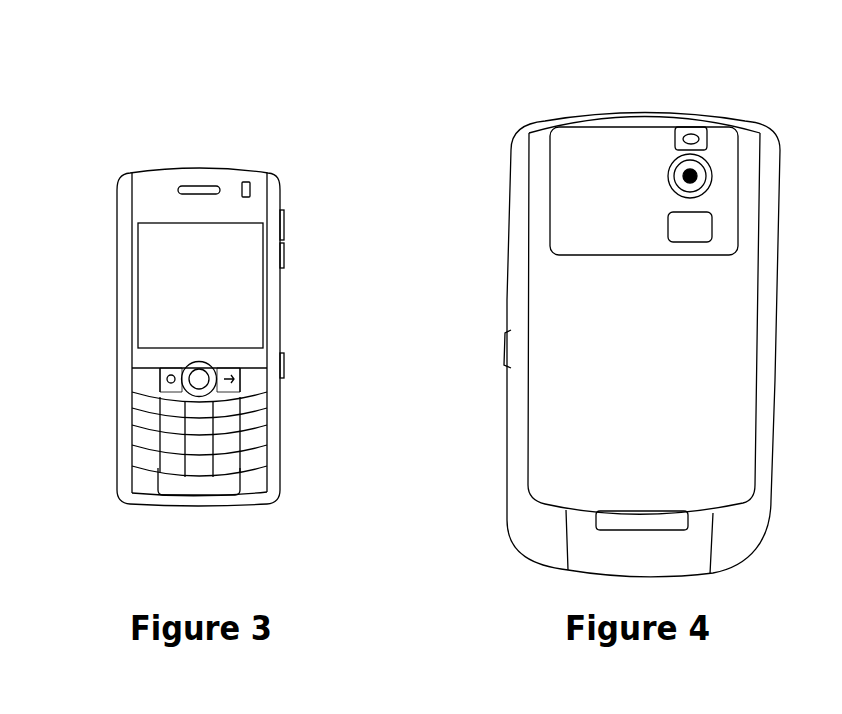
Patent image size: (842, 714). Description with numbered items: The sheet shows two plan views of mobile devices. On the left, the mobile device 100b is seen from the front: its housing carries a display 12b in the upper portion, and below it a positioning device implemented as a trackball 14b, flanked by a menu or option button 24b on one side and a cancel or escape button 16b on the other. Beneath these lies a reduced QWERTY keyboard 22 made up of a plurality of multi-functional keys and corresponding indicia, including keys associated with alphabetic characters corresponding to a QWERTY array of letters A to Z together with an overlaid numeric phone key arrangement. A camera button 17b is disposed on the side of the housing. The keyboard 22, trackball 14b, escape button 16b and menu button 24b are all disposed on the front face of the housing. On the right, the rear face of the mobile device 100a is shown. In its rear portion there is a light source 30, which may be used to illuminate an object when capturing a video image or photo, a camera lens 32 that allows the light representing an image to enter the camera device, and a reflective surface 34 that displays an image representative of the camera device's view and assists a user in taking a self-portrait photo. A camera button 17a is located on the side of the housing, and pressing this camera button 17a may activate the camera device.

In FIG. 3, the mobile device 100b is at (96, 239).
In FIG. 3, the display 12b is at (210, 282).
In FIG. 3, the trackball 14b is at (210, 362).
In FIG. 3, the cancel or escape button 16b is at (237, 383).
In FIG. 3, the camera button 17b is at (286, 374).
In FIG. 3, the reduced QWERTY keyboard 22 is at (151, 464).
In FIG. 3, the menu or option button 24b is at (170, 377).
In FIG. 4, the mobile device 100a is at (542, 88).
In FIG. 4, the camera button 17a is at (503, 348).
In FIG. 4, the light source 30 is at (697, 132).
In FIG. 4, the camera lens 32 is at (697, 174).
In FIG. 4, the reflective surface 34 is at (697, 228).